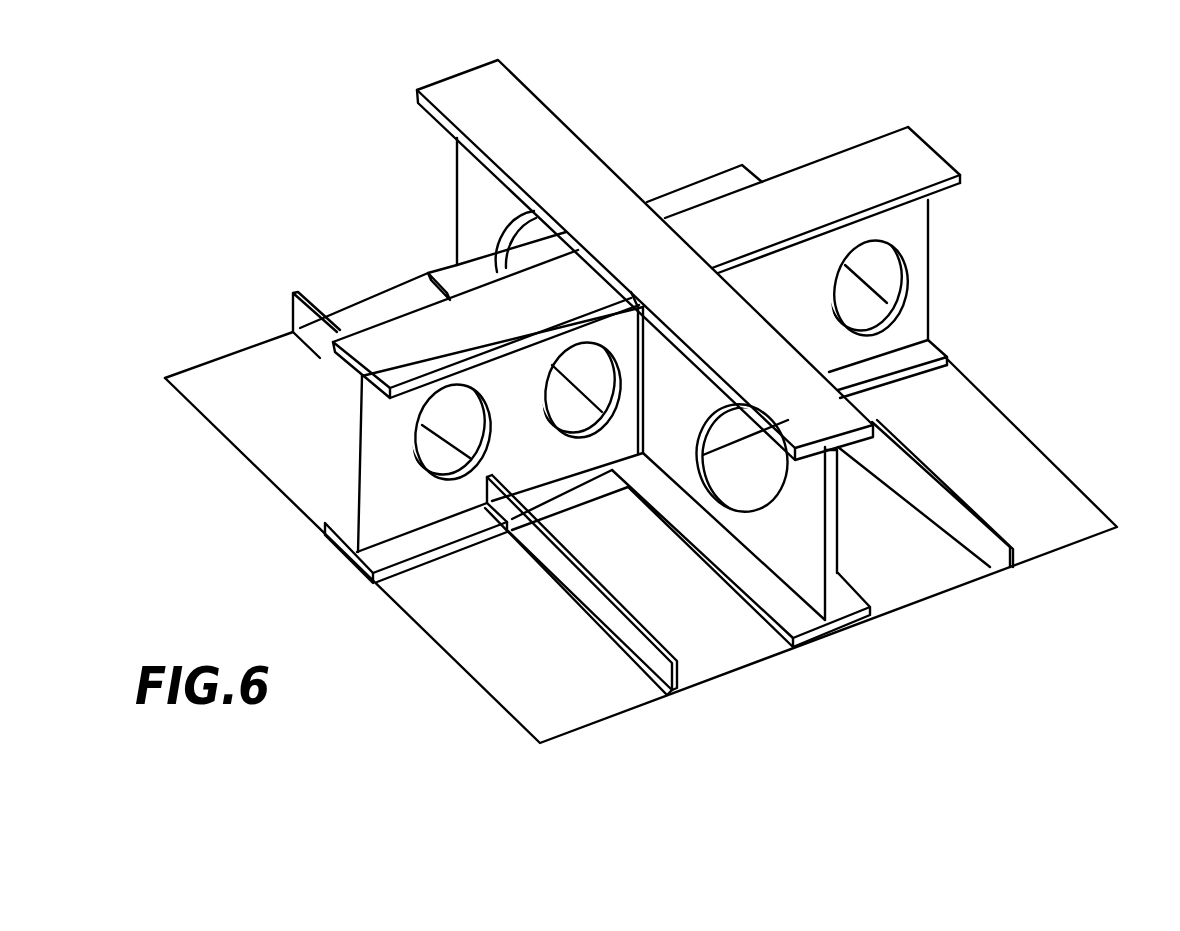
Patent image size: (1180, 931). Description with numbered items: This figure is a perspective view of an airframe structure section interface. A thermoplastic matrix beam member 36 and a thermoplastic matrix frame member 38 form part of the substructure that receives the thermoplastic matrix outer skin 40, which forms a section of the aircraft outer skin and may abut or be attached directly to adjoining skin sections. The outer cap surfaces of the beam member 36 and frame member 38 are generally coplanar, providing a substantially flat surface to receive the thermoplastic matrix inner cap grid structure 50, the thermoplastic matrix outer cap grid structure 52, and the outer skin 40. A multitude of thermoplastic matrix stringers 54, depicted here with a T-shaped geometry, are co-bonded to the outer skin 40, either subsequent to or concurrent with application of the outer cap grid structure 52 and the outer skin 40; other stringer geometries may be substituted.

The thermoplastic matrix beam member 36 is at (913, 327).
The thermoplastic matrix frame member 38 is at (478, 190).
The thermoplastic matrix outer skin 40 is at (1060, 512).
The thermoplastic matrix inner cap grid structure 50 is at (770, 178).
The thermoplastic matrix outer cap grid structure 52 is at (928, 383).
The thermoplastic matrix stringer 54 is at (980, 562).